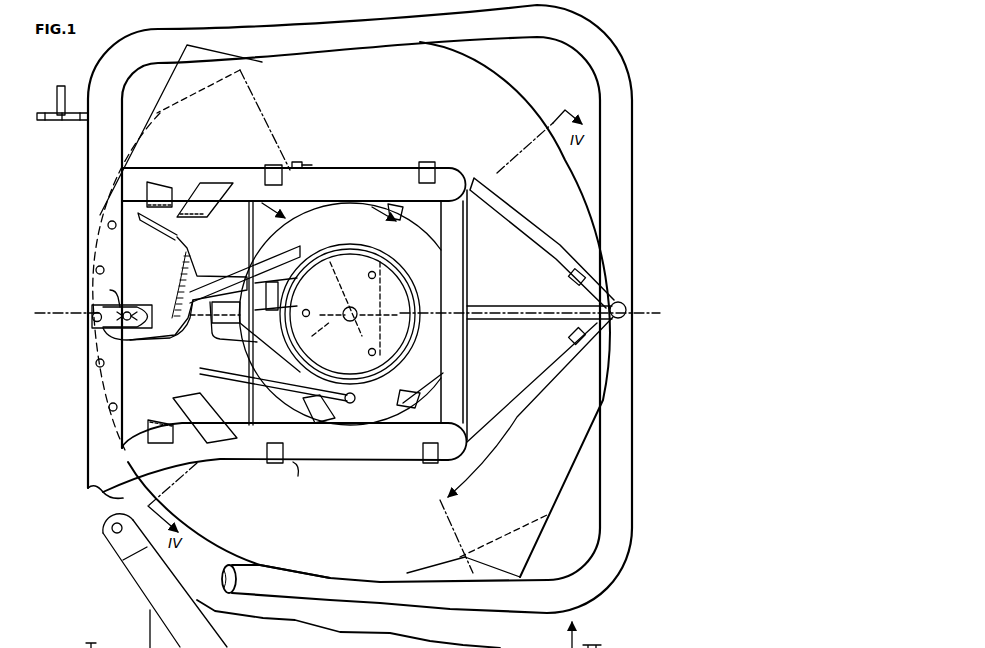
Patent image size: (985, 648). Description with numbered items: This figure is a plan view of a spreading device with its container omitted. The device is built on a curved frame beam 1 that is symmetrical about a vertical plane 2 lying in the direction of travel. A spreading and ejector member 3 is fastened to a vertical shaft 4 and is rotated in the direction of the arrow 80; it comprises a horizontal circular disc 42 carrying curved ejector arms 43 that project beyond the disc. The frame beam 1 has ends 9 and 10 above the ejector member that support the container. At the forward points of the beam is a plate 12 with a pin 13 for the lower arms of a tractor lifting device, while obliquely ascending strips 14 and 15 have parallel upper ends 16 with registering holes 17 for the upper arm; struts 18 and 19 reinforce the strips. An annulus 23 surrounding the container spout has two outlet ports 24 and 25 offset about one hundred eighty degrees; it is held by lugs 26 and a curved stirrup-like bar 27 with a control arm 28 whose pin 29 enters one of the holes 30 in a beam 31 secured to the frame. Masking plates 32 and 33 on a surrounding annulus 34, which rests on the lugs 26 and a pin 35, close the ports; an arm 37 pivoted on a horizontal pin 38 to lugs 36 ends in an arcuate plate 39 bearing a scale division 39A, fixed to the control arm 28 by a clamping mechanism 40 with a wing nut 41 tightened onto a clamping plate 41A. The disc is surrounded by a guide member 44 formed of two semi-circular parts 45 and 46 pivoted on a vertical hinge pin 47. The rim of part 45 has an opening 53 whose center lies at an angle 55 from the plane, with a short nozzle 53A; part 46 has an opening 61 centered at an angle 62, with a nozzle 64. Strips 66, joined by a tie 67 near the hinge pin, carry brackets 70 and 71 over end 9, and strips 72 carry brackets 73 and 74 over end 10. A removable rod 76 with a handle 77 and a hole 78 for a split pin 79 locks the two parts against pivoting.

The frame beam 1 is at (592, 82).
The vertical plane 2 is at (676, 312).
The spreading and ejector member 3 is at (402, 411).
The vertical shaft 4 is at (353, 312).
The end of frame beam 9 is at (366, 452).
The end of frame beam 10 is at (369, 176).
The plate 12 is at (50, 123).
The pin 13 is at (57, 96).
The obliquely ascending strip 14 is at (221, 420).
The obliquely ascending strip 15 is at (215, 205).
The upper end of strip 16 is at (119, 550).
The registering hole 17 is at (112, 533).
The strut 18 is at (156, 420).
The strut 19 is at (158, 189).
The annulus 23 is at (353, 299).
The outlet port 24 is at (318, 331).
The outlet port 25 is at (382, 284).
The lug 26 is at (284, 250).
The curved stirrup-like bar 27 is at (232, 346).
The control arm 28 is at (184, 318).
The pin 29 is at (91, 320).
The hole 30 is at (96, 368).
The beam 31 is at (90, 414).
The masking plate 32 is at (360, 337).
The masking plate 33 is at (397, 264).
The annulus 34 is at (382, 248).
The pin 35 is at (428, 306).
The lug 36 is at (270, 347).
The arm 37 is at (201, 284).
The horizontal pin 38 is at (276, 281).
The arcuate plate 39 is at (170, 241).
The scale division 39A is at (184, 246).
The clamping mechanism 40 is at (121, 304).
The wing nut 41 is at (136, 305).
The clamping plate 41A is at (116, 326).
The circular disc 42 is at (444, 262).
The ejector arm 43 is at (405, 215).
The guide member 44 is at (614, 367).
The guide member part 45 is at (572, 492).
The guide member part 46 is at (460, 63).
The vertical hinge pin 47 is at (627, 320).
The opening 53 is at (503, 538).
The nozzle 53A is at (530, 552).
The angle 55 is at (554, 321).
The opening 61 is at (248, 72).
The angle 62 is at (64, 302).
The nozzle 64 is at (197, 52).
The strip 66 is at (556, 362).
The tie 67 is at (578, 308).
The bracket 70 is at (272, 463).
The bracket 71 is at (430, 463).
The strip 72 is at (546, 238).
The bracket 73 is at (270, 165).
The bracket 74 is at (428, 162).
The rod 76 is at (294, 214).
The handle 77 is at (299, 477).
The hole 78 is at (298, 162).
The split pin 79 is at (310, 164).
The arrow 80 is at (434, 82).